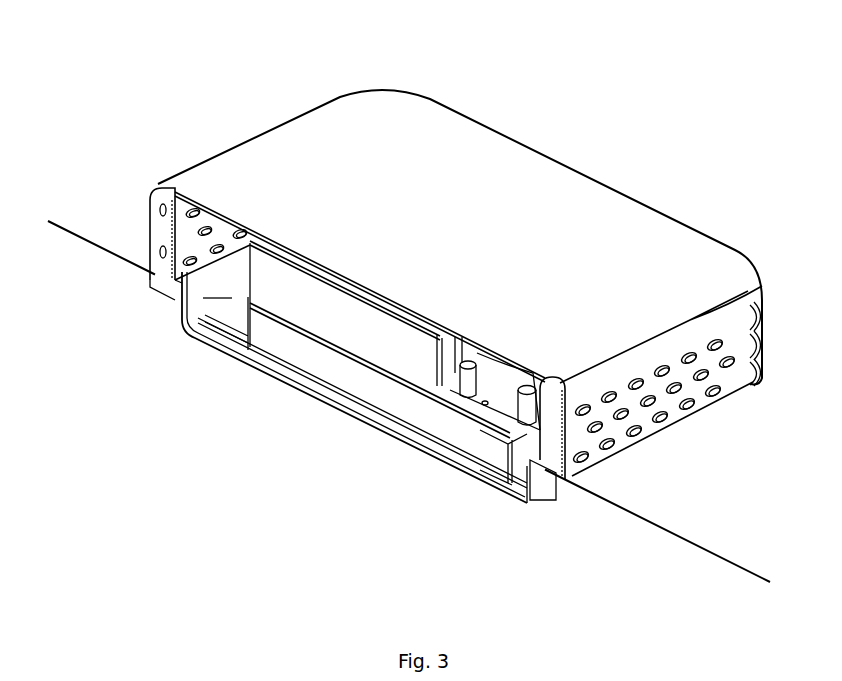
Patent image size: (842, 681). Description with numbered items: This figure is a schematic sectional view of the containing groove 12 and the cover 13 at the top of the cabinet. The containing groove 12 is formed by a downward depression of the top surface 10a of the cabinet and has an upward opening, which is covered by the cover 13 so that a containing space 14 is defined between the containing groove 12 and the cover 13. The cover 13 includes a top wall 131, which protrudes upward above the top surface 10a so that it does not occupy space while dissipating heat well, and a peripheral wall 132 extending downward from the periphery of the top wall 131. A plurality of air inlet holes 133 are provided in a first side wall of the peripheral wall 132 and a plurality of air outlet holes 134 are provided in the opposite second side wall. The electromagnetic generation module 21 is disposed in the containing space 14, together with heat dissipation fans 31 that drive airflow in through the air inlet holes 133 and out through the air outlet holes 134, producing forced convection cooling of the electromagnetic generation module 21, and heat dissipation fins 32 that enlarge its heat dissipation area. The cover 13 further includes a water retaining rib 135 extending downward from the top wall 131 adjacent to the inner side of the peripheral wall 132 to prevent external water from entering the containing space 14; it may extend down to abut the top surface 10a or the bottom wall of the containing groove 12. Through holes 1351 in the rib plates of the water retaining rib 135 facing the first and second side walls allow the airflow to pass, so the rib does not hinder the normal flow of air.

The top surface 10a is at (740, 543).
The containing groove 12 is at (205, 345).
The cover 13 is at (377, 80).
The top wall 131 is at (552, 180).
The peripheral wall 132 is at (730, 386).
The air inlet holes 133 is at (163, 250).
The air outlet holes 134 is at (633, 432).
The water retaining rib 135 is at (172, 200).
The through holes 1351 is at (165, 279).
The containing space 14 is at (225, 314).
The electromagnetic generation module 21 is at (375, 395).
The heat dissipation fans 31 is at (497, 393).
The heat dissipation fins 32 is at (335, 321).